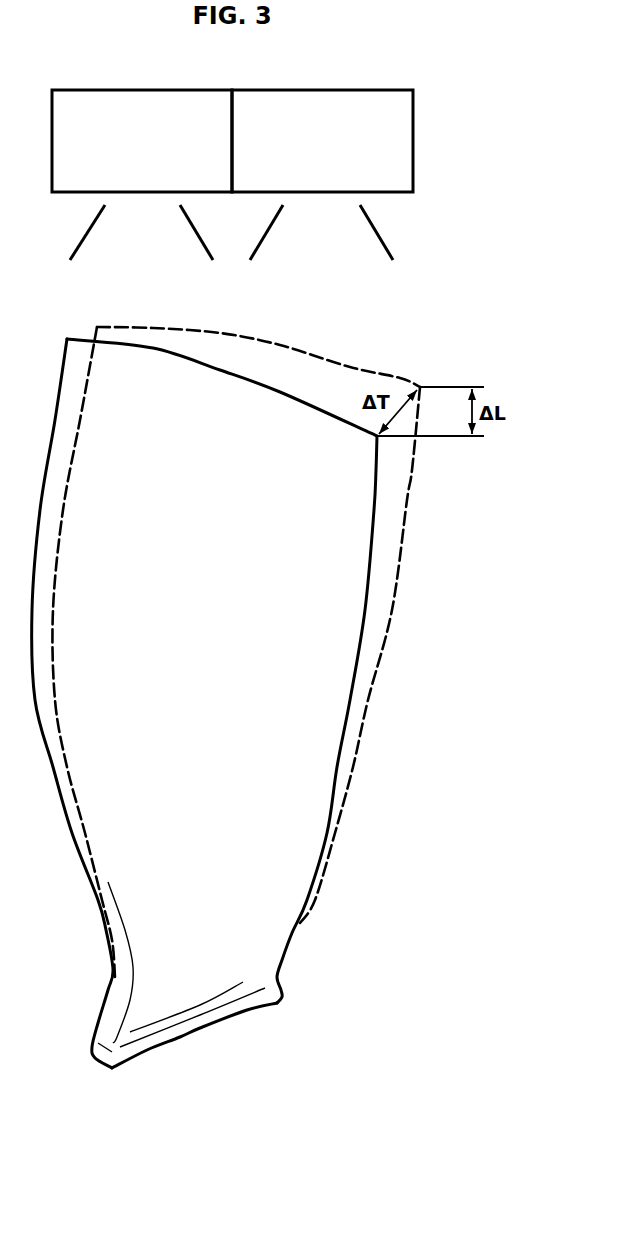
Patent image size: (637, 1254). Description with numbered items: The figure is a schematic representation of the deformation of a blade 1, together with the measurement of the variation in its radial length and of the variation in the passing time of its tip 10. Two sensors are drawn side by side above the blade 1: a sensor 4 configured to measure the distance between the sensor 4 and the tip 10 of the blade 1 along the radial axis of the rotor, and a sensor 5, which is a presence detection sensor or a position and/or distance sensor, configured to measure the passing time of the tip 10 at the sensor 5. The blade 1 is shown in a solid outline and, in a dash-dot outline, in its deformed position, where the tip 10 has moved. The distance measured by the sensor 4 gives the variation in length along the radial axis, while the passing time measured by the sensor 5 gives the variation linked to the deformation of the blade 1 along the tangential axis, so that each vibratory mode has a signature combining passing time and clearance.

The blade 1 is at (408, 664).
The sensor 4 is at (142, 175).
The sensor 5 is at (322, 175).
The tip 10 is at (300, 311).